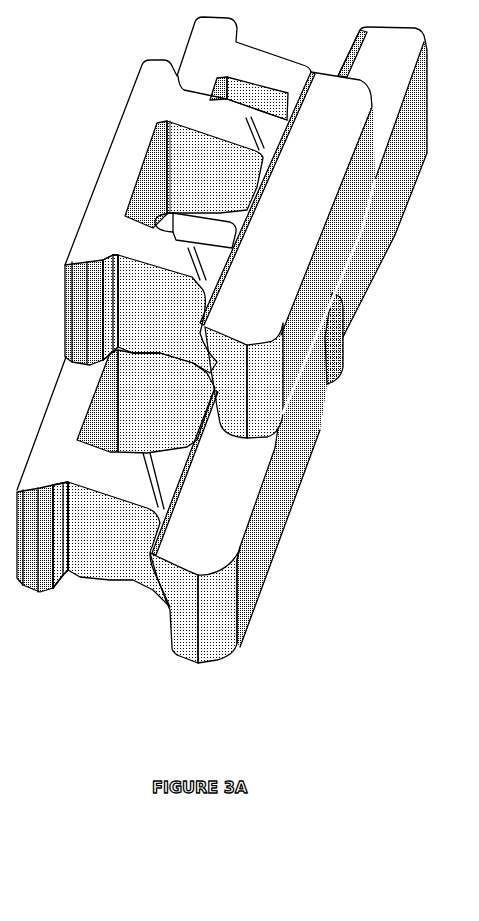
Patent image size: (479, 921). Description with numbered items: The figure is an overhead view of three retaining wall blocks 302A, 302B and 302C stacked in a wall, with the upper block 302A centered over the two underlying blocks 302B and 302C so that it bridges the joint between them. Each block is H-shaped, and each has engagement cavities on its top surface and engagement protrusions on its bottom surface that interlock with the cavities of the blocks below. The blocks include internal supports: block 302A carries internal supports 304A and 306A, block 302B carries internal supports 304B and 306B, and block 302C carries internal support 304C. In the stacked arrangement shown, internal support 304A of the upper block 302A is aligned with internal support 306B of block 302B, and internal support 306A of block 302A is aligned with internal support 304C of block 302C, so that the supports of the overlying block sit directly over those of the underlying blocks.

The retaining wall block 302A is at (318, 186).
The retaining wall block 302B is at (233, 518).
The retaining wall block 302C is at (406, 67).
The internal support 304A is at (167, 320).
The internal support 304B is at (124, 550).
The internal support 304C is at (222, 242).
The internal support 306A is at (220, 180).
The internal support 306B is at (177, 408).